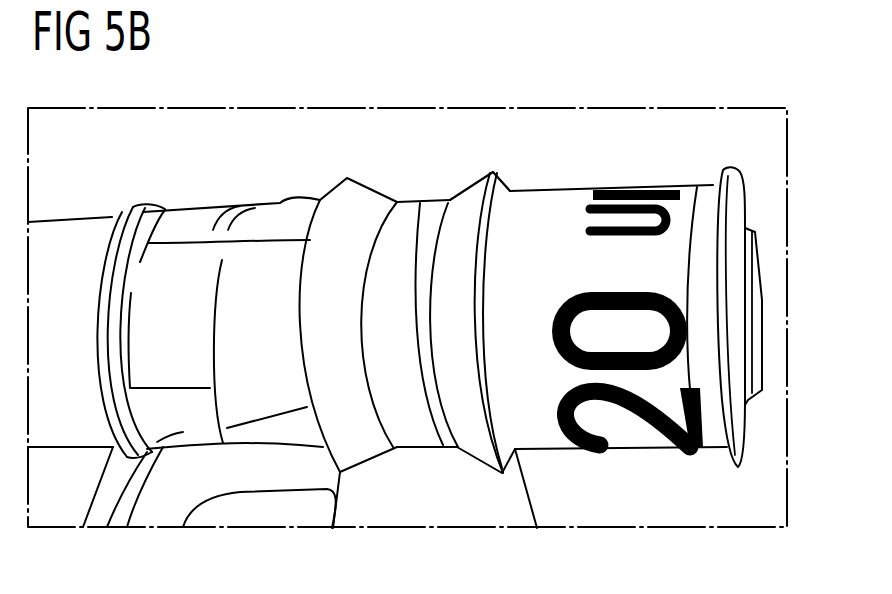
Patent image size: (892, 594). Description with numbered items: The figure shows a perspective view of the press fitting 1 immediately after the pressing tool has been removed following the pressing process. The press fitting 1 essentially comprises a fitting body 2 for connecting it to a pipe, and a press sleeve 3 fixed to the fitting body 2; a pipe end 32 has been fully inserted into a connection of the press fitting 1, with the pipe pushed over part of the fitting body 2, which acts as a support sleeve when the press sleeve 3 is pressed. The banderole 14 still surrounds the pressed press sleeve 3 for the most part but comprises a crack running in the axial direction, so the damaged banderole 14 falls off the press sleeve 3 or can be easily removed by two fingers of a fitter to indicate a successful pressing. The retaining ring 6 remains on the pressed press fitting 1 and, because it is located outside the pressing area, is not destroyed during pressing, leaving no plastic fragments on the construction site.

The press fitting 1 is at (447, 184).
The fitting body 2 is at (757, 313).
The press sleeve 3 is at (135, 212).
The retaining ring 6 is at (380, 200).
The banderole 14 is at (205, 212).
The pipe end 32 is at (62, 223).